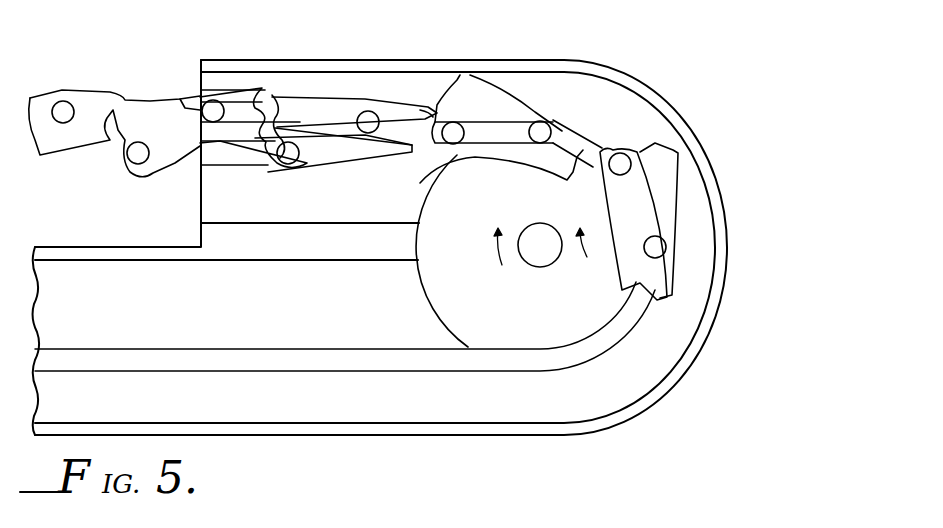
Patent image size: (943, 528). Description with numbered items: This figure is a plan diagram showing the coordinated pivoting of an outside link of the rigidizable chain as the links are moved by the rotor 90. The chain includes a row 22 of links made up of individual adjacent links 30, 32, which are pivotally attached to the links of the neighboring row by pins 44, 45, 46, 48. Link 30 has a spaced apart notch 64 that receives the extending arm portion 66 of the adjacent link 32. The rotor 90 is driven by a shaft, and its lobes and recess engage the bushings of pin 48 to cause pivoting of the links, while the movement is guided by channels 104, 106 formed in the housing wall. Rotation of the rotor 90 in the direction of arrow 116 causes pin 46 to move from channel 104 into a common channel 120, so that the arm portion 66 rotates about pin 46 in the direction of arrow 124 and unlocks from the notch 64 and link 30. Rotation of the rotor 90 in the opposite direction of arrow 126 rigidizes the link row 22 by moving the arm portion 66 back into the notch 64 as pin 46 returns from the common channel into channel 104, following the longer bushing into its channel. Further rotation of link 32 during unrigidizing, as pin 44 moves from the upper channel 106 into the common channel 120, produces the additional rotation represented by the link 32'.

The row of links 22 is at (96, 88).
The link 30 is at (219, 78).
The link 32 is at (574, 126).
The further rotated link 32' is at (687, 211).
The pin 44 is at (202, 110).
The pin 45 is at (133, 160).
The pin 46 is at (283, 158).
The pin 48 is at (548, 129).
The notch 64 is at (270, 114).
The extending arm portion 66 is at (278, 92).
The rotor 90 is at (512, 311).
The channel 104 is at (217, 164).
The channel 106 is at (263, 90).
The arrow 116 is at (497, 248).
The common channel 120 is at (610, 148).
The arrow 124 is at (305, 76).
The arrow 126 is at (586, 260).